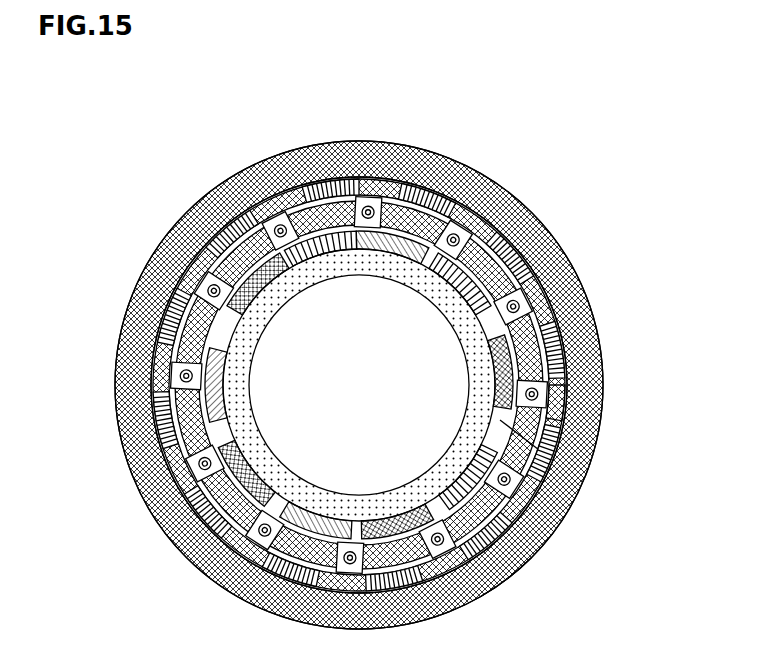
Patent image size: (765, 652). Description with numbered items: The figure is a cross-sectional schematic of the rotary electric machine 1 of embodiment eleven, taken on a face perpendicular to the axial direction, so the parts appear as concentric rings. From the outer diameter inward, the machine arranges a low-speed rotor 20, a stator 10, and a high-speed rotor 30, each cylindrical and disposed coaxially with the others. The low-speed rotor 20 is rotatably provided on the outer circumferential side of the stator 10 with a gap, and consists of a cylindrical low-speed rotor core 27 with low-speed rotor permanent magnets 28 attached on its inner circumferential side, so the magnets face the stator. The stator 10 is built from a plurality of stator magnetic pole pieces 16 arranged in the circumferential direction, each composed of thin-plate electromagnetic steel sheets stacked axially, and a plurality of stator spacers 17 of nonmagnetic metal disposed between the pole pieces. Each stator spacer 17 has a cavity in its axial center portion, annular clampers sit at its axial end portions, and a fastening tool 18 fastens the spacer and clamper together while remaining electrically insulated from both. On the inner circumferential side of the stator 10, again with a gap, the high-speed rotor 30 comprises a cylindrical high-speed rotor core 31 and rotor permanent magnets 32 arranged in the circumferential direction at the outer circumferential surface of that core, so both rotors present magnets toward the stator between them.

The rotary electric machine 1 is at (150, 138).
The stator 10 is at (510, 247).
The stator magnetic pole pieces 16 is at (540, 355).
The stator spacers 17 is at (548, 380).
The fastening tool 18 is at (565, 418).
The low-speed rotor 20 is at (228, 178).
The low-speed rotor core 27 is at (287, 173).
The low-speed rotor permanent magnets 28 is at (330, 180).
The high-speed rotor 30 is at (575, 452).
The high-speed rotor core 31 is at (517, 537).
The rotor permanent magnets 32 is at (505, 574).